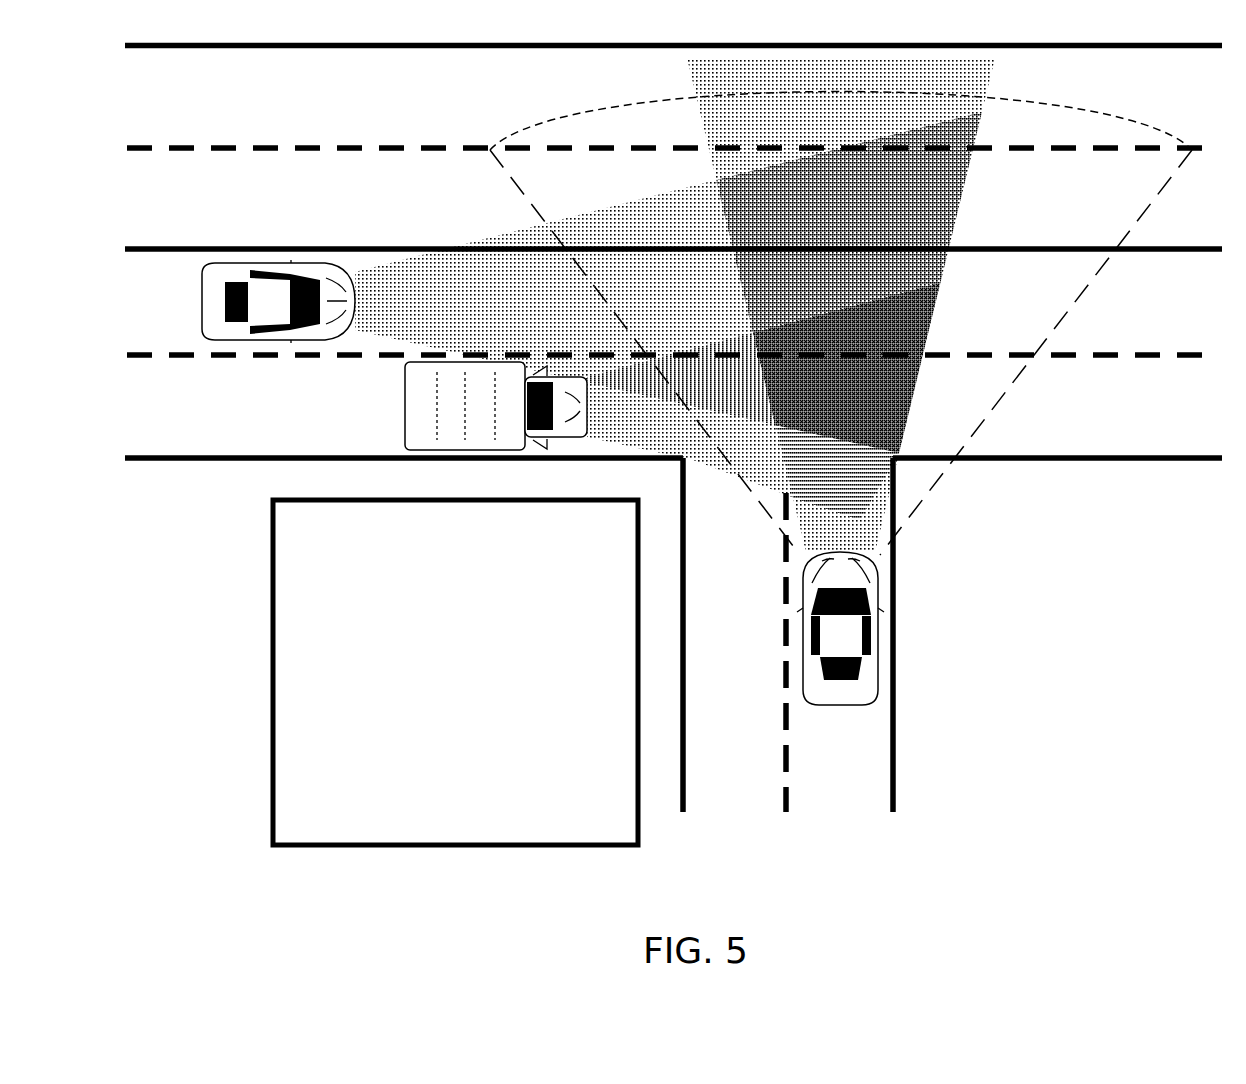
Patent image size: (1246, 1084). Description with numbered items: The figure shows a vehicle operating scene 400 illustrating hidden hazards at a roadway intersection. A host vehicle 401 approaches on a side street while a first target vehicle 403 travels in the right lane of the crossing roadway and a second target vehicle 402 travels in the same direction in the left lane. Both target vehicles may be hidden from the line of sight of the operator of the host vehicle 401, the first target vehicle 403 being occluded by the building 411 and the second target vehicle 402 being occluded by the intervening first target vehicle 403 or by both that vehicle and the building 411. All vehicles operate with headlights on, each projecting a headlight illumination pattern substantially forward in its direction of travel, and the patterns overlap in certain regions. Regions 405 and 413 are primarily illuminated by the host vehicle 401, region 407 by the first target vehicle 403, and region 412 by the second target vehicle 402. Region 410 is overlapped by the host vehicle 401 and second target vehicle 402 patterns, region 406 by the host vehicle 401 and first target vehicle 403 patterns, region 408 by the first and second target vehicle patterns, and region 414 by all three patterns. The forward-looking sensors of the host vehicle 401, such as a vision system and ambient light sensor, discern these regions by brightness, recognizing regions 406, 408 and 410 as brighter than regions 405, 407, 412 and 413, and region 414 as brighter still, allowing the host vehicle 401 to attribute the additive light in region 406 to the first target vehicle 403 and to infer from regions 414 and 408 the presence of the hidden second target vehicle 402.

The scene 400 is at (1043, 757).
The host vehicle 401 is at (862, 706).
The second target vehicle 402 is at (203, 280).
The first target vehicle 403 is at (407, 385).
The region 405 is at (860, 527).
The region 406 is at (897, 473).
The region 407 is at (770, 468).
The region 408 is at (698, 440).
The region 410 is at (967, 179).
The building 411 is at (472, 684).
The region 412 is at (668, 210).
The region 413 is at (720, 70).
The region 414 is at (897, 412).